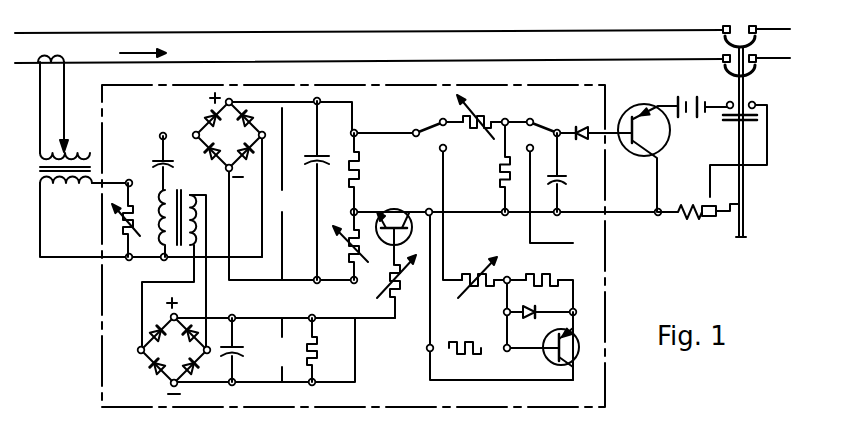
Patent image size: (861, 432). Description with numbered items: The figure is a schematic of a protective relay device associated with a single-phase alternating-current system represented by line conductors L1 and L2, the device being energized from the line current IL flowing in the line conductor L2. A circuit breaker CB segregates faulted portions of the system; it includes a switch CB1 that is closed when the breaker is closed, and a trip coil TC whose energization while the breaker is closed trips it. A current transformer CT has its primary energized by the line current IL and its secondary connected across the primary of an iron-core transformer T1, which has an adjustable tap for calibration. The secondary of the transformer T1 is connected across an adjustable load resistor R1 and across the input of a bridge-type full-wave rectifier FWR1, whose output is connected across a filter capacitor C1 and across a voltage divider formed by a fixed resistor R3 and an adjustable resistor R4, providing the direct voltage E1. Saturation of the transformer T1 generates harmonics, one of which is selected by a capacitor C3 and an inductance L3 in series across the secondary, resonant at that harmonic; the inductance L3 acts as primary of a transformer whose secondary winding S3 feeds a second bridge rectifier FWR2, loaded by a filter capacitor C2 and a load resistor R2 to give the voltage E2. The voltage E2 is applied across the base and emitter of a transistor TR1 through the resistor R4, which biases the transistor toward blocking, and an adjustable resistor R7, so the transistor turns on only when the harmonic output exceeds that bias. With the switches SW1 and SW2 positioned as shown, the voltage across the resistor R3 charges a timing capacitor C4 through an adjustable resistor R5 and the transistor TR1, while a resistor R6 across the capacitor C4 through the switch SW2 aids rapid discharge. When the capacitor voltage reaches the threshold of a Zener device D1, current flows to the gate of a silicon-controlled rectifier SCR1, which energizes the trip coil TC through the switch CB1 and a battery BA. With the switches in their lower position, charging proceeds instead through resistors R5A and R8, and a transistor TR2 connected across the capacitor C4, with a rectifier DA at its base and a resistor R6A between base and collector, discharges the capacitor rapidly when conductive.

The line conductor L1 is at (21, 31).
The line conductor L2 is at (28, 66).
The current transformer CT is at (60, 57).
The line current IL is at (151, 52).
The transformer T1 is at (60, 188).
The adjustable load resistor R1 is at (147, 200).
The capacitor C3 is at (148, 166).
The inductance L3 is at (161, 230).
The secondary winding S3 is at (188, 198).
The full-wave rectifier FWR1 is at (205, 128).
The direct voltage E1 is at (278, 194).
The filter capacitor C1 is at (306, 157).
The fixed resistor R3 is at (362, 174).
The controllable switch TR1 is at (380, 211).
The adjustable resistor R4 is at (346, 249).
The adjustable resistor R7 is at (400, 282).
The load resistor R2 is at (320, 340).
The voltage E2 is at (278, 350).
The full-wave rectifier FWR2 is at (148, 360).
The filter capacitor C2 is at (245, 355).
The switch SW1 is at (428, 129).
The adjustable resistor R5 is at (477, 113).
The switch SW2 is at (545, 107).
The resistor R6 is at (497, 168).
The capacitor C4 is at (587, 178).
The device D1 is at (581, 124).
The silicon-controlled rectifier SCR1 is at (636, 105).
The battery BA is at (688, 96).
The circuit breaker CB is at (733, 150).
The switch CB1 is at (731, 119).
The trip coil TC is at (680, 200).
The resistor R5A is at (469, 270).
The resistor R8 is at (525, 272).
The rectifier DA is at (530, 308).
The resistor R6A is at (461, 344).
The switch TR2 is at (544, 358).